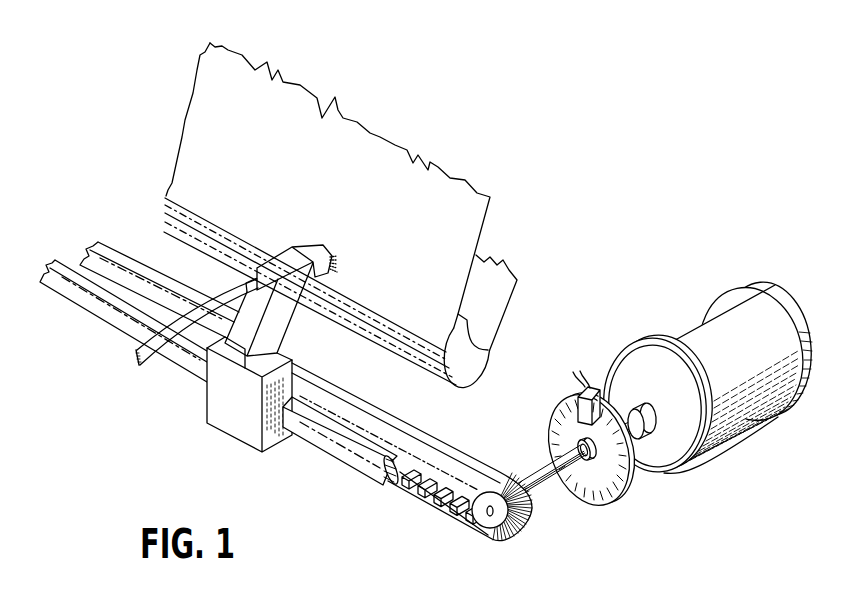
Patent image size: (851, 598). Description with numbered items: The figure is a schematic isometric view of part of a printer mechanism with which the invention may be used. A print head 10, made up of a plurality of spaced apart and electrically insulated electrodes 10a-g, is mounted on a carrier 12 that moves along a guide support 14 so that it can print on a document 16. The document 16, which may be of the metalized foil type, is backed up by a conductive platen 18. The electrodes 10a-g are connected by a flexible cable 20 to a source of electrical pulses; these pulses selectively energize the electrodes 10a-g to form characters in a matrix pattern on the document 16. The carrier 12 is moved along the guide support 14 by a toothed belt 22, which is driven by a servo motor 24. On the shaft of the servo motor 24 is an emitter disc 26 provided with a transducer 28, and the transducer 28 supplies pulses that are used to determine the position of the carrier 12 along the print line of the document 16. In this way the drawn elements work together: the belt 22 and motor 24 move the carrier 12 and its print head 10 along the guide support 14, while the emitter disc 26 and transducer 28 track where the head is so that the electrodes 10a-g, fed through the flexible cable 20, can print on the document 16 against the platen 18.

The print head 10 is at (263, 243).
The electrodes 10a-g is at (343, 251).
The carrier 12 is at (232, 462).
The guide support 14 is at (350, 468).
The document 16 is at (483, 223).
The conductive platen 18 is at (473, 370).
The flexible cable 20 is at (134, 352).
The toothed belt 22 is at (447, 512).
The servo motor 24 is at (727, 440).
The emitter disc 26 is at (615, 507).
The transducer 28 is at (596, 387).